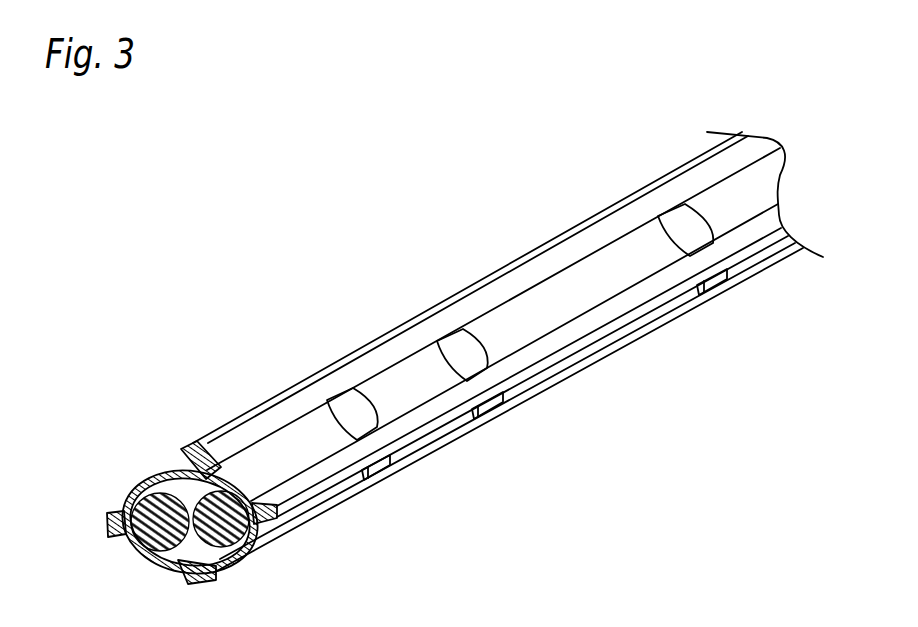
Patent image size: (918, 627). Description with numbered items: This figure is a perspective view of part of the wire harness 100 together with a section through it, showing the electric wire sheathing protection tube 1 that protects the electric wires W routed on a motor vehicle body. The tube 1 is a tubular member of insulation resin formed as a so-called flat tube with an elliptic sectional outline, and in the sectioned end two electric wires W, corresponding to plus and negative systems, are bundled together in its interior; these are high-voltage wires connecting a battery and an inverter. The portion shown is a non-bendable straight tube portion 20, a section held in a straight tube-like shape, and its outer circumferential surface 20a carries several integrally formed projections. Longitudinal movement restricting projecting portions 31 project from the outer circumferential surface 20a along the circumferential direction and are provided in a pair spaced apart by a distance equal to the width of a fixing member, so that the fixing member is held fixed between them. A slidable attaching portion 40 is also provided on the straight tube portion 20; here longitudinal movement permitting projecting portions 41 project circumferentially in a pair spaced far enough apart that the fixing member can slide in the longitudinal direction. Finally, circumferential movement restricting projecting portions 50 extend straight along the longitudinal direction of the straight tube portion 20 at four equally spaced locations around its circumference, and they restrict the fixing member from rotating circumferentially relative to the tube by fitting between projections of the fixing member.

The electric wire sheathing protection tube 1 is at (372, 218).
The wire harness 100 is at (238, 326).
The non-bendable straight tube portion 20 is at (437, 242).
The outer circumferential surface 20a is at (630, 270).
The longitudinal movement restricting projecting portion 31 is at (347, 393).
The slidable attaching portion 40 is at (610, 262).
The longitudinal movement permitting projecting portion 41 is at (675, 212).
The circumferential movement restricting projecting portion 50 is at (627, 273).
The electric wire W is at (200, 482).